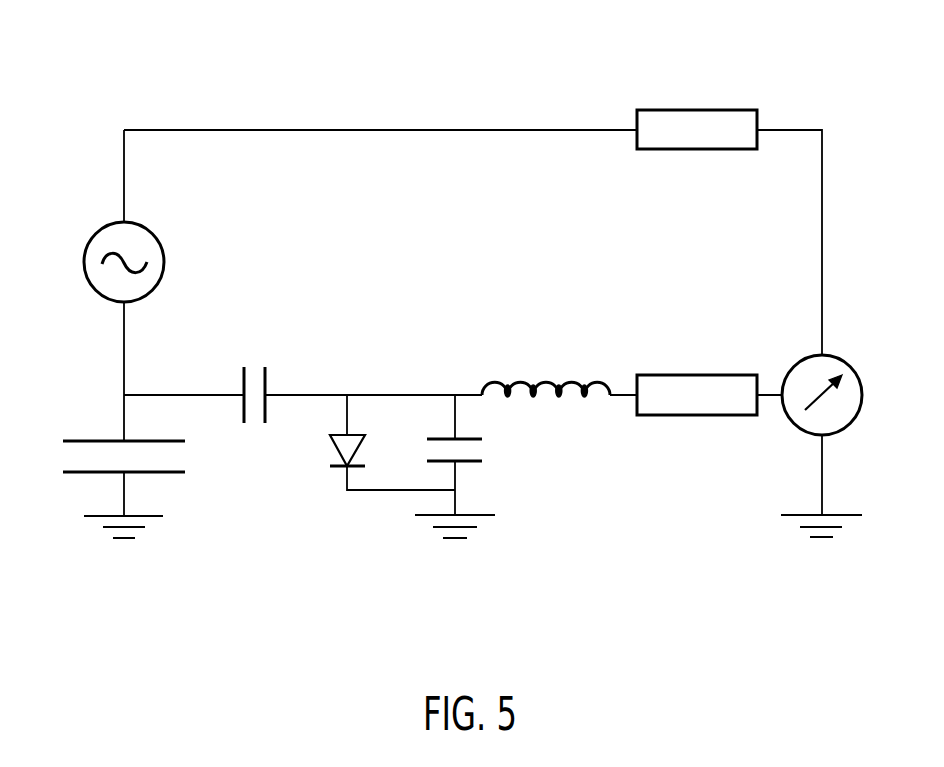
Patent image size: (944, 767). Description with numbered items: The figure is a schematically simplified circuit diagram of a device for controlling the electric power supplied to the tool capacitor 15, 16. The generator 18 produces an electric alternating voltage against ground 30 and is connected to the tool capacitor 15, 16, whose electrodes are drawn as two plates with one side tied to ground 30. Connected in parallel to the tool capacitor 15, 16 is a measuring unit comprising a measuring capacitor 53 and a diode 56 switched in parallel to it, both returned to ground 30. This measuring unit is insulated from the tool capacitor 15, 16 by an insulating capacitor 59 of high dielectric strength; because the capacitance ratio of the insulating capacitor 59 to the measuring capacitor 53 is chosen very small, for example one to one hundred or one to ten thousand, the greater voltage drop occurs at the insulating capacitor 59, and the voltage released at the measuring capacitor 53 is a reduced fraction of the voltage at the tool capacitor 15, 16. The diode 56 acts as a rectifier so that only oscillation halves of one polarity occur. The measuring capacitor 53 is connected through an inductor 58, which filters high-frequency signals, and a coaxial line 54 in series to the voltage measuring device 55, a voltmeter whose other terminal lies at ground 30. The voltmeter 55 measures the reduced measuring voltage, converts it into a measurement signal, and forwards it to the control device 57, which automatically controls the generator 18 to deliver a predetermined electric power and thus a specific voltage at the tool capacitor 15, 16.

The generator 18 is at (102, 228).
The tool capacitor 15 is at (82, 439).
The tool capacitor 16 is at (85, 475).
The ground 30 is at (155, 513).
The insulating capacitor 59 is at (267, 373).
The diode 56 is at (330, 448).
The measuring capacitor 53 is at (480, 438).
The inductor 58 is at (545, 381).
The coaxial line 54 is at (727, 375).
The control device 57 is at (727, 110).
The voltage measuring device 55 is at (855, 367).